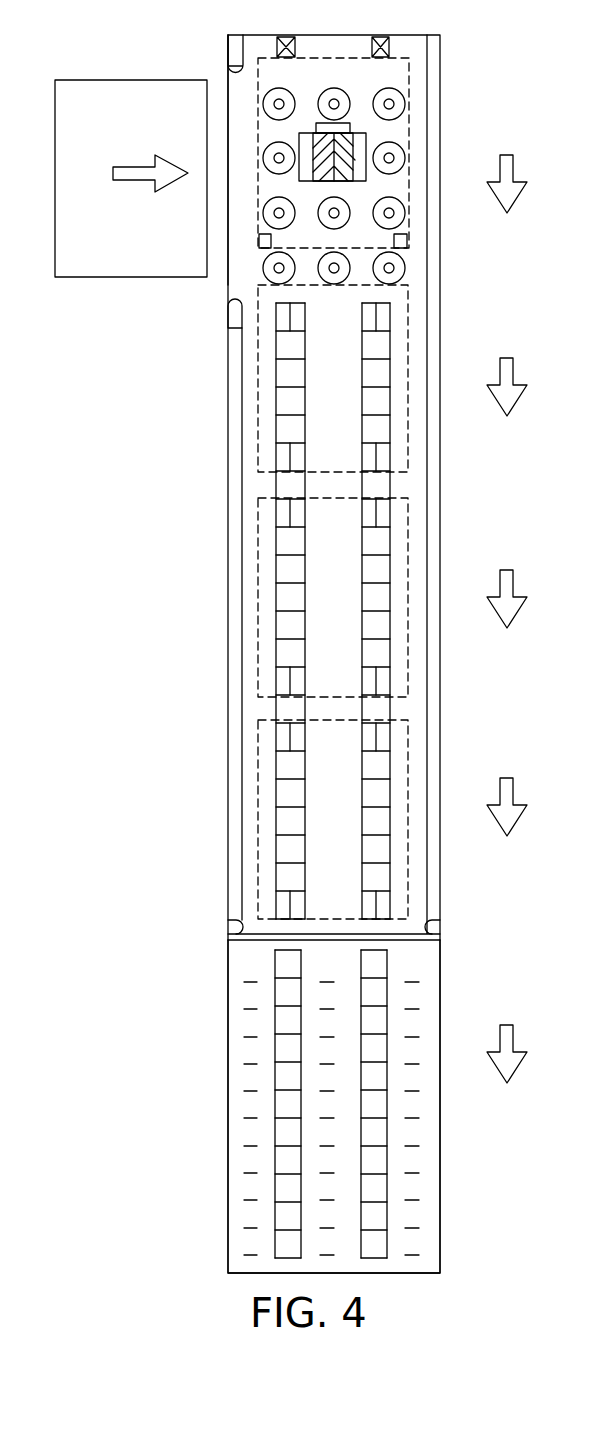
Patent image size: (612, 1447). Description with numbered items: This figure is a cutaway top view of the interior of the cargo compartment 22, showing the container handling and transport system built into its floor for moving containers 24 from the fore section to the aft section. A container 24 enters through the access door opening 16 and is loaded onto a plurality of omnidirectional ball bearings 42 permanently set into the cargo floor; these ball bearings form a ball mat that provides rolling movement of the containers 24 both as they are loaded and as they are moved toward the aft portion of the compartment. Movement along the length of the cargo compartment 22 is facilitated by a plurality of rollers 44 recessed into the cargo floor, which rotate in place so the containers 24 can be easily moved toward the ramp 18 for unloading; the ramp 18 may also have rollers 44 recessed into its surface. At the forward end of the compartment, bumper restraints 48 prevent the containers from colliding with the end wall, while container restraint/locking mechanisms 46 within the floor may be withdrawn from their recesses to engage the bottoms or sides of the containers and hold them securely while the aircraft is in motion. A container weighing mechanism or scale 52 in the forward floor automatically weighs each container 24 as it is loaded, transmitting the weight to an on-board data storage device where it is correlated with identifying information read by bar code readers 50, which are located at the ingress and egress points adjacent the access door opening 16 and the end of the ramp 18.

The access door opening 16 is at (236, 273).
The ramp 18 is at (228, 1023).
The cargo compartment 22 is at (258, 486).
The container 24 is at (133, 280).
The omnidirectional ball bearings 42 is at (404, 158).
The rollers 44 is at (283, 600).
The container restraint/locking mechanisms 46 is at (407, 240).
The bumper restraints 48 is at (294, 52).
The bar code readers 50 is at (228, 48).
The scale 52 is at (348, 135).